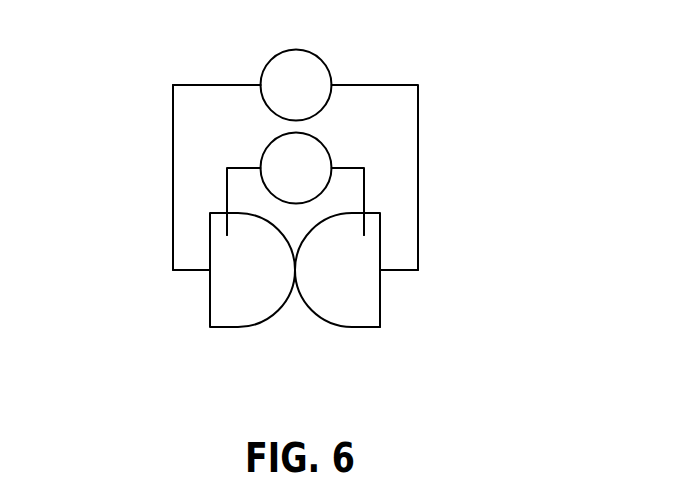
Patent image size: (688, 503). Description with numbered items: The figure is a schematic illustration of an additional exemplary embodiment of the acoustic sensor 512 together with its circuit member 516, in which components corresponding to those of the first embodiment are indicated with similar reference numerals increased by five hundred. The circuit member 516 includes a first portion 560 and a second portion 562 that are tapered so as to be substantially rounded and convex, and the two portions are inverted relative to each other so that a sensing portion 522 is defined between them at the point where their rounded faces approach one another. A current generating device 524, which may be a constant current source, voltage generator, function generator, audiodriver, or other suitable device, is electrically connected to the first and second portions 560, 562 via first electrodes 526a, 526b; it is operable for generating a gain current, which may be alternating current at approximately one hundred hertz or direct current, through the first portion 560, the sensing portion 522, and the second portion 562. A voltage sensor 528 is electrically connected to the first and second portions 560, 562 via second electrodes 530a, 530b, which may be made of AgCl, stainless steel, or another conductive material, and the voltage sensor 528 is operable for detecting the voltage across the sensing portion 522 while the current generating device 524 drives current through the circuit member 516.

The acoustic sensor 512 is at (465, 55).
The circuit member 516 is at (392, 317).
The sensing portion 522 is at (296, 283).
The current generating device 524 is at (333, 70).
The voltage sensor 528 is at (333, 158).
The second electrode 530a is at (227, 227).
The second electrode 530b is at (364, 222).
The first electrode 526a is at (210, 273).
The first electrode 526b is at (380, 268).
The first portion 560 is at (228, 312).
The second portion 562 is at (365, 294).